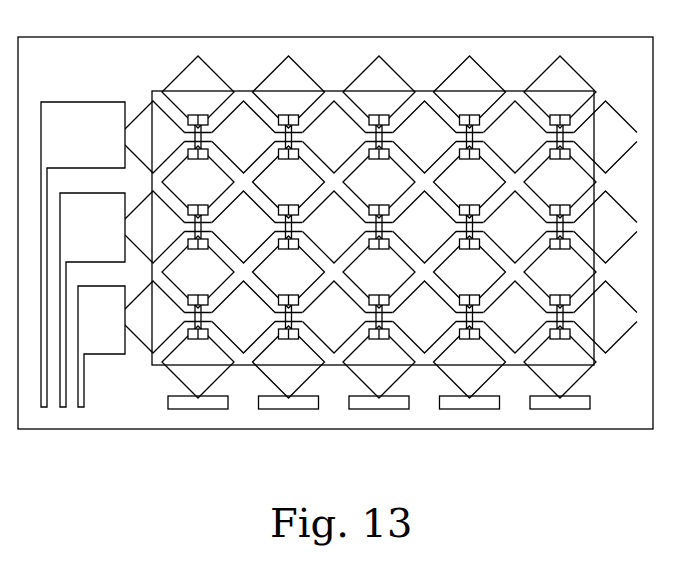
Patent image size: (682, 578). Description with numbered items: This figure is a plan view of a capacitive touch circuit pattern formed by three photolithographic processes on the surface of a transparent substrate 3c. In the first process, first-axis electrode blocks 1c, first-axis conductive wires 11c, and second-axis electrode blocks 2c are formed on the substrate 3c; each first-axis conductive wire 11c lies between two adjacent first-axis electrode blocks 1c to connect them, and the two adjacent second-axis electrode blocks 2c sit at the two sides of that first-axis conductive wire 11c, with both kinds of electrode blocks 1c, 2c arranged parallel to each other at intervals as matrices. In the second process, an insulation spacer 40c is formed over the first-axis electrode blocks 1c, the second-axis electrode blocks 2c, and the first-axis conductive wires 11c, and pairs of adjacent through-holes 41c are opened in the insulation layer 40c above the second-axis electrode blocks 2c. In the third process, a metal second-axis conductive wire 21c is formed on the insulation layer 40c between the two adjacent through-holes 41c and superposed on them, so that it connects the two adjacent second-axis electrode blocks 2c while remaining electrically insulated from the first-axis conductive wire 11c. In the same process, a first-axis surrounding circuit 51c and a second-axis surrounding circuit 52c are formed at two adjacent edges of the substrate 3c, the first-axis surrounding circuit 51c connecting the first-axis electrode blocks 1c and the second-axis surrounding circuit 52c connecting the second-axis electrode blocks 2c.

The first-axis electrode block 1c is at (145, 128).
The second-axis electrode block 2c is at (183, 73).
The first-axis conductive wire 11c is at (190, 128).
The second-axis conductive wire 21c is at (207, 133).
The through-hole 41c is at (570, 212).
The insulation spacer 40c is at (595, 280).
The first-axis surrounding circuit 51c is at (80, 116).
The second-axis surrounding circuit 52c is at (180, 405).
The transparent substrate 3c is at (513, 408).